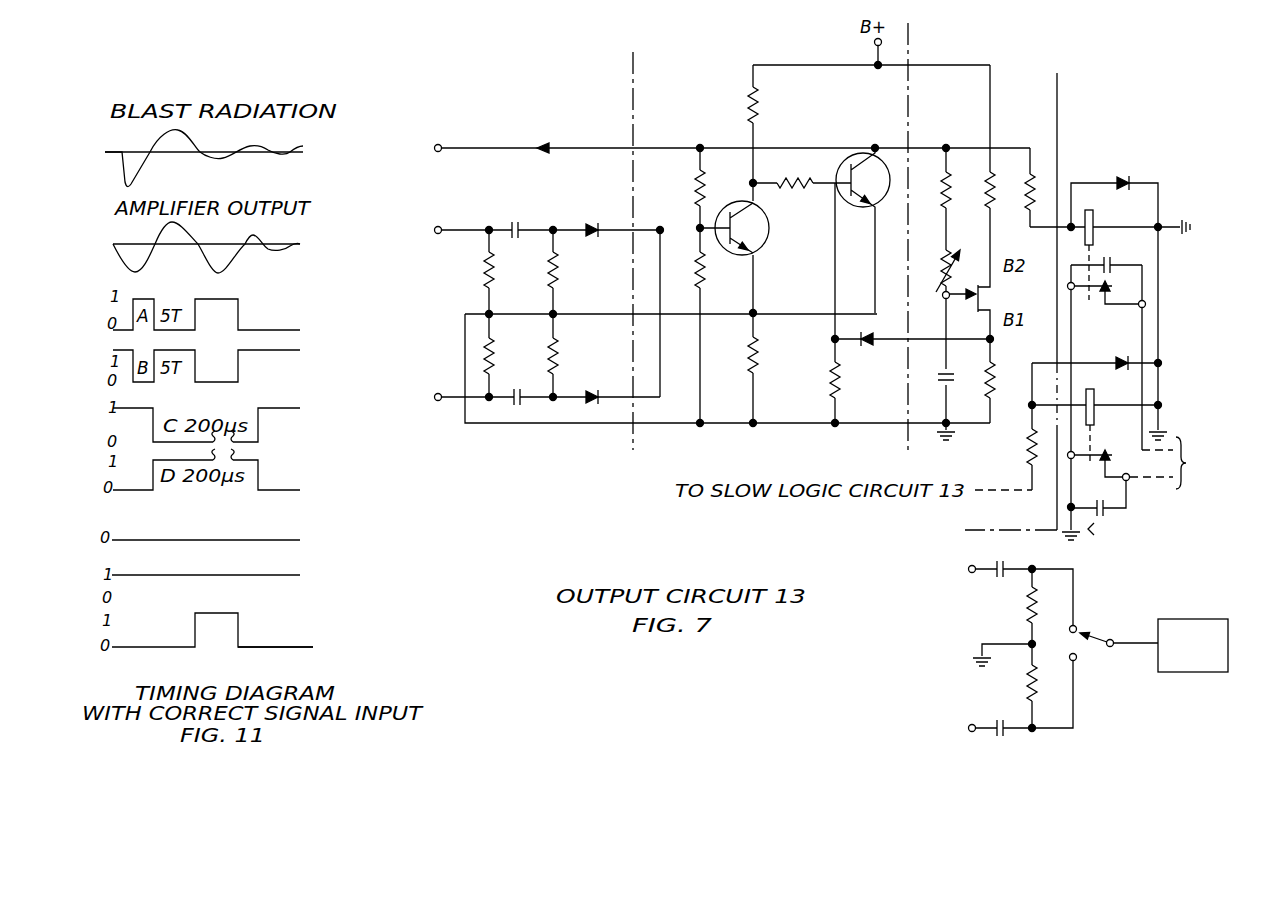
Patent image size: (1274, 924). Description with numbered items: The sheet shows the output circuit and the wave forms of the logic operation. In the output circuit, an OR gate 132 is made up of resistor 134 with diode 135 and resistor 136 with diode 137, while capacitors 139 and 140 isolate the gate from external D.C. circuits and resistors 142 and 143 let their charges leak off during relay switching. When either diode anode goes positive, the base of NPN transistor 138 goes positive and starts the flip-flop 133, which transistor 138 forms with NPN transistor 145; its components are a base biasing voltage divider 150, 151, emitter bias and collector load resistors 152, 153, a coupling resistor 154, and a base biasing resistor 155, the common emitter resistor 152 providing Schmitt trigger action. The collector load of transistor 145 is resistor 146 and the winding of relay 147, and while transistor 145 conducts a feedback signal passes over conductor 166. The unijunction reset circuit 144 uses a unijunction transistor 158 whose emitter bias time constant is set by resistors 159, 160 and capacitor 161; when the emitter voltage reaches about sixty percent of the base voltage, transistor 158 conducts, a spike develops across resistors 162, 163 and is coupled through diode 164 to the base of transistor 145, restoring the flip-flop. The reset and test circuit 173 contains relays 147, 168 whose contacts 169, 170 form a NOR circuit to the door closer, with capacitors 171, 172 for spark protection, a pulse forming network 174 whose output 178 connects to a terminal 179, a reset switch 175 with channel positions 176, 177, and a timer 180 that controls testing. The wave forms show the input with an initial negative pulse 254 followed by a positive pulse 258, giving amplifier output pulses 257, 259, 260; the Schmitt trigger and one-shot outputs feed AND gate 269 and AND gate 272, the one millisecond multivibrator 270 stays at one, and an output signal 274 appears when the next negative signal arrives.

In FIG. 11, the initial negative sense pulse 254 is at (152, 166).
In FIG. 11, the positive sense pulse 258 is at (195, 138).
In FIG. 11, the negative output pulse 257 is at (150, 256).
In FIG. 11, the positive sense output pulse 259 is at (199, 227).
In FIG. 11, the negative sense output pulse 260 is at (243, 260).
In FIG. 11, the AND gate 272 is at (206, 527).
In FIG. 11, the 1 ms. one-shot multivibrator 270 is at (206, 561).
In FIG. 11, the output signal 274 is at (205, 600).
In FIG. 11, the AND gate 269 is at (295, 632).
In FIG. 7, the conductor 166 is at (434, 144).
In FIG. 7, the base biasing voltage divider resistor 151 is at (434, 226).
In FIG. 7, the common emitter bias resistor 152 is at (434, 393).
In FIG. 7, the capacitor 139 is at (513, 212).
In FIG. 7, the diode 135 is at (585, 212).
In FIG. 7, the resistor 142 is at (495, 268).
In FIG. 7, the resistor 134 is at (559, 268).
In FIG. 7, the resistor 143 is at (494, 343).
In FIG. 7, the resistor 136 is at (559, 343).
In FIG. 7, the capacitor 140 is at (509, 380).
In FIG. 7, the diode 137 is at (582, 380).
In FIG. 7, the OR gate 132 is at (558, 461).
In FIG. 7, the collector load resistor 153 is at (760, 103).
In FIG. 7, the base biasing voltage divider resistor 150 is at (712, 196).
In FIG. 7, the coupling resistor 154 is at (771, 166).
In FIG. 7, the NPN transistor 138 is at (771, 234).
In FIG. 7, the NPN transistor 145 is at (842, 205).
In FIG. 7, the diode 164 is at (853, 343).
In FIG. 7, the base biasing resistor 155 is at (842, 378).
In FIG. 7, the flip-flop circuit 133 is at (763, 446).
In FIG. 7, the resistor 159 is at (958, 185).
In FIG. 7, the resistor 160 is at (968, 260).
In FIG. 7, the resistor 162 is at (994, 216).
In FIG. 7, the unijunction transistor 158 is at (990, 296).
In FIG. 7, the capacitor 161 is at (966, 366).
In FIG. 7, the resistor 163 is at (1007, 370).
In FIG. 7, the unijunction reset circuit 144 is at (998, 448).
In FIG. 7, the resistor 146 is at (1040, 164).
In FIG. 7, the reset and test circuit 173 is at (1258, 191).
In FIG. 7, the relay 147 is at (1096, 218).
In FIG. 7, the capacitor 171 is at (1108, 250).
In FIG. 7, the contact 169 is at (1092, 296).
In FIG. 7, the relay 168 is at (1096, 398).
In FIG. 7, the contact 170 is at (1118, 456).
In FIG. 7, the capacitor 172 is at (1110, 500).
In FIG. 7, the pulse forming network 174 is at (991, 702).
In FIG. 7, the output 178 is at (968, 571).
In FIG. 7, the terminal 179 is at (968, 733).
In FIG. 7, the channel position 176 is at (1082, 616).
In FIG. 7, the channel position 177 is at (1080, 658).
In FIG. 7, the reset switch 175 is at (1090, 634).
In FIG. 7, the timer 180 is at (1183, 619).